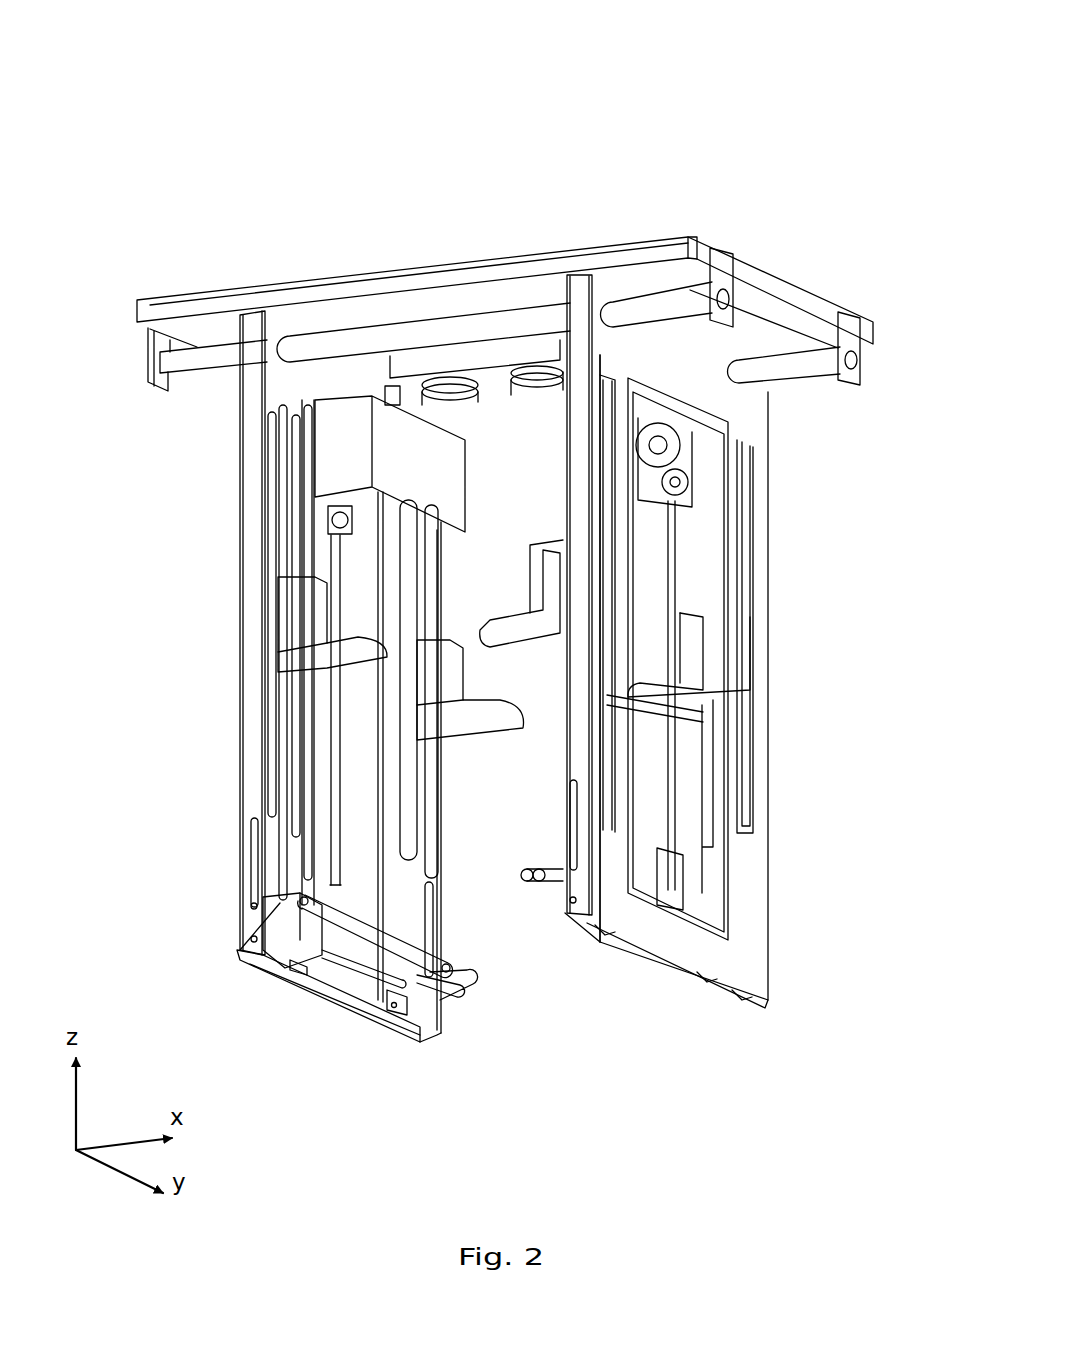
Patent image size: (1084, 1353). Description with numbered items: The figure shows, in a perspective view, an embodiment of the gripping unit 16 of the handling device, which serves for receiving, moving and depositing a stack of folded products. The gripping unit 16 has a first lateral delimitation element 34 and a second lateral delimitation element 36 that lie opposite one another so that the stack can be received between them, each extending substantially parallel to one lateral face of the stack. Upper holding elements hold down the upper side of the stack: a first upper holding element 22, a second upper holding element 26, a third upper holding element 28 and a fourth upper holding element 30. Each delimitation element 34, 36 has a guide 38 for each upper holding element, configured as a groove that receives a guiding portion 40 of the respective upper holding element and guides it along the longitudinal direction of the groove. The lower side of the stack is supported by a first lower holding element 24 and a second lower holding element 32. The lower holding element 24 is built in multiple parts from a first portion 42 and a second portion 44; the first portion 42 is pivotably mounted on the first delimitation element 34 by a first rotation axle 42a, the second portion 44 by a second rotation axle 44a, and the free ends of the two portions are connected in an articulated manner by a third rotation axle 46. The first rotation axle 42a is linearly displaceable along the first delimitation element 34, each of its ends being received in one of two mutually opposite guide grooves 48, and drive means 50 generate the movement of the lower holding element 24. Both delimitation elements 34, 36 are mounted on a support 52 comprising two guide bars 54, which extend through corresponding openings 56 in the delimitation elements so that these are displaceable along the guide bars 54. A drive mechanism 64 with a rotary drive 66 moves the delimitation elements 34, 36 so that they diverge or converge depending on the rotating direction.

The gripping unit 16 is at (776, 125).
The first upper holding element 22 is at (300, 600).
The first lower holding element 24 is at (460, 1029).
The second upper holding element 26 is at (430, 680).
The third upper holding element 28 is at (527, 628).
The fourth upper holding element 30 is at (690, 686).
The second lower holding element 32 is at (548, 917).
The first lateral delimitation element 34 is at (248, 737).
The second lateral delimitation element 36 is at (750, 880).
The guide 38 is at (420, 571).
The guiding portion 40 is at (607, 598).
The first portion 42 is at (253, 940).
The first rotation axle 42a is at (253, 905).
The second portion 44 is at (293, 938).
The second rotation axle 44a is at (280, 903).
The third rotation axle 46 is at (303, 955).
The guide grooves 48 is at (255, 830).
The drive means 50 is at (302, 504).
The support 52 is at (500, 266).
The guide bars 54 is at (693, 303).
The openings 56 is at (290, 367).
The drive mechanism 64 is at (505, 351).
The rotary drive 66 is at (441, 357).